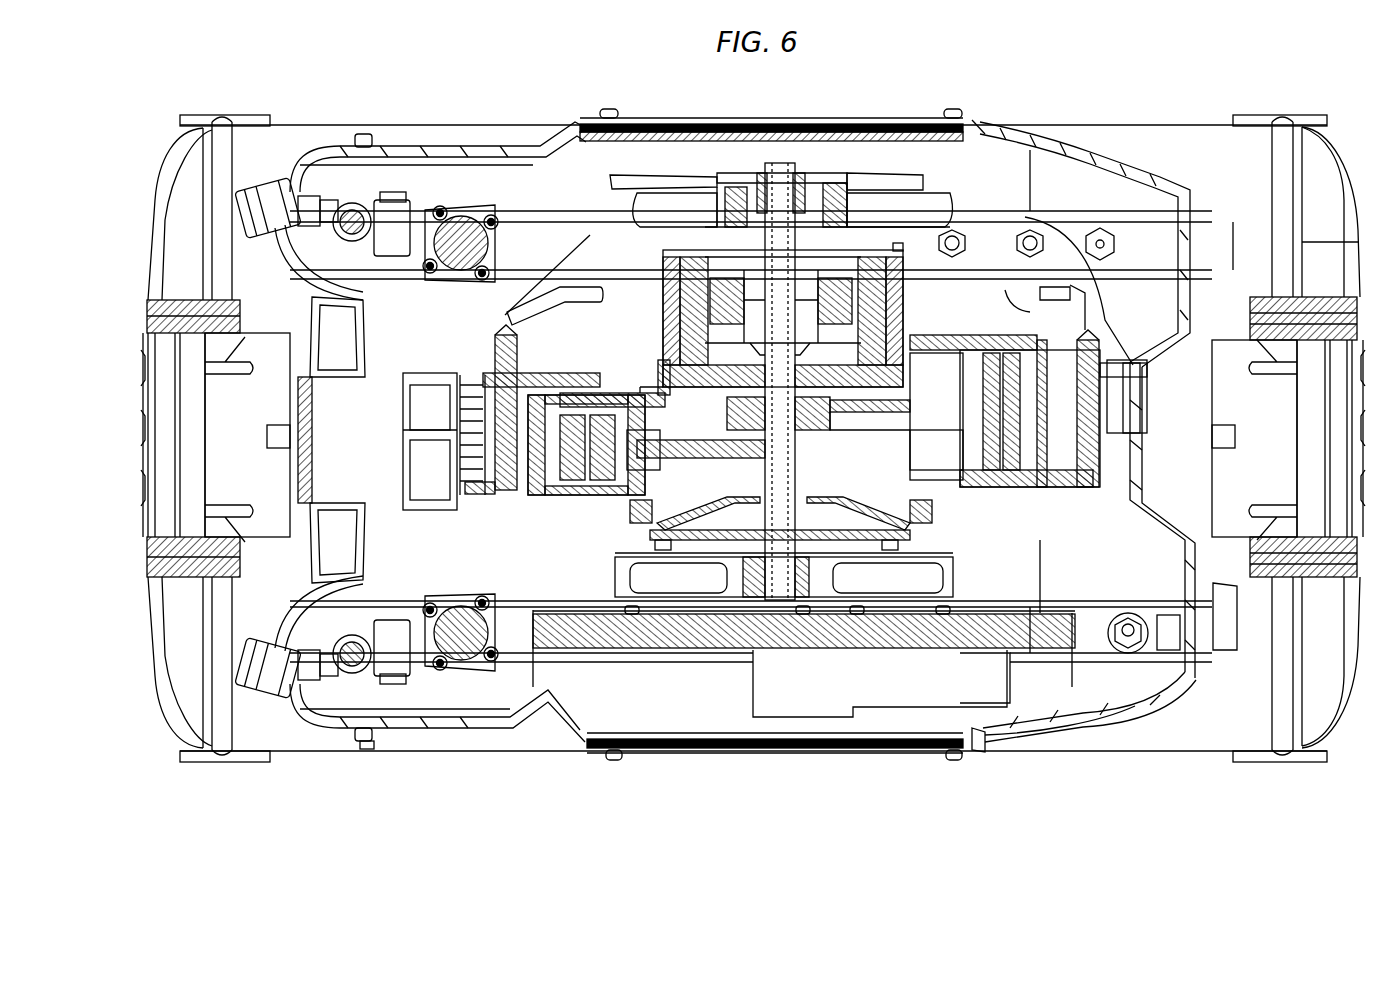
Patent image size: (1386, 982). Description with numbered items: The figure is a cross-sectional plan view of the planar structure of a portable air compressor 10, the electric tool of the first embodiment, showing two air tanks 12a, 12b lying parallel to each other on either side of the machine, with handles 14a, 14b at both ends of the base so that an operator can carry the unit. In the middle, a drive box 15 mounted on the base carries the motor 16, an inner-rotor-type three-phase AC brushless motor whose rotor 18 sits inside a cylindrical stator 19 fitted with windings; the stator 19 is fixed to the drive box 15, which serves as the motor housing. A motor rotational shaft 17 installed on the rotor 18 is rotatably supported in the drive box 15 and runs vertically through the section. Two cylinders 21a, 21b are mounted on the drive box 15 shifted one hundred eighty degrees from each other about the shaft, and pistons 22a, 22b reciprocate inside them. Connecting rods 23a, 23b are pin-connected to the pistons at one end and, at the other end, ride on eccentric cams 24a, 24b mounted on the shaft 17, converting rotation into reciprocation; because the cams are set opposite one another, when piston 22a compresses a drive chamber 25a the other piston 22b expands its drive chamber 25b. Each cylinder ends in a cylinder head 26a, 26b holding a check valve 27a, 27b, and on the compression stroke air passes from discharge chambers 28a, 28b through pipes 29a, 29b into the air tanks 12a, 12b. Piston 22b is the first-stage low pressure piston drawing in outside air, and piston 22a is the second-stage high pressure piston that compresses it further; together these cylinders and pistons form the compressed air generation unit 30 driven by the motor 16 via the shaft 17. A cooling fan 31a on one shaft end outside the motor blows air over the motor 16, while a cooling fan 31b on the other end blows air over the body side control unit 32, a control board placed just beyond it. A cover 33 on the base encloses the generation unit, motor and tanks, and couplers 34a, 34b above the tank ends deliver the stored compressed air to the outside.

The air compressor 10 is at (488, 755).
The air tank 12a is at (1153, 142).
The air tank 12b is at (1148, 730).
The handle 14a is at (180, 537).
The handle 14b is at (1322, 537).
The drive box 15 is at (647, 367).
The motor 16 is at (878, 243).
The motor rotational shaft 17 is at (782, 187).
The rotor 18 is at (755, 275).
The stator 19 is at (1005, 293).
The cylinder 21a is at (585, 517).
The cylinder 21b is at (1005, 483).
The piston 22a is at (523, 480).
The piston 22b is at (1050, 460).
The connecting rod 23a is at (745, 462).
The connecting rod 23b is at (932, 410).
The eccentric cam 24a is at (835, 443).
The eccentric cam 24b is at (747, 463).
The drive chamber 25a is at (483, 437).
The drive chamber 25b is at (1103, 377).
The cylinder head 26a is at (483, 413).
The cylinder head 26b is at (1097, 463).
The check valve 27a is at (480, 490).
The check valve 27b is at (1057, 433).
The discharge chamber 28a is at (513, 425).
The discharge chamber 28b is at (1075, 363).
The pipe 29a is at (628, 293).
The pipe 29b is at (1027, 217).
The compressed air generation unit 30 is at (623, 523).
The cooling fan 31a is at (865, 178).
The cooling fan 31b is at (680, 577).
The body side control unit 32 is at (937, 633).
The cover 33 is at (1028, 730).
The coupler 34a is at (263, 197).
The coupler 34b is at (260, 700).